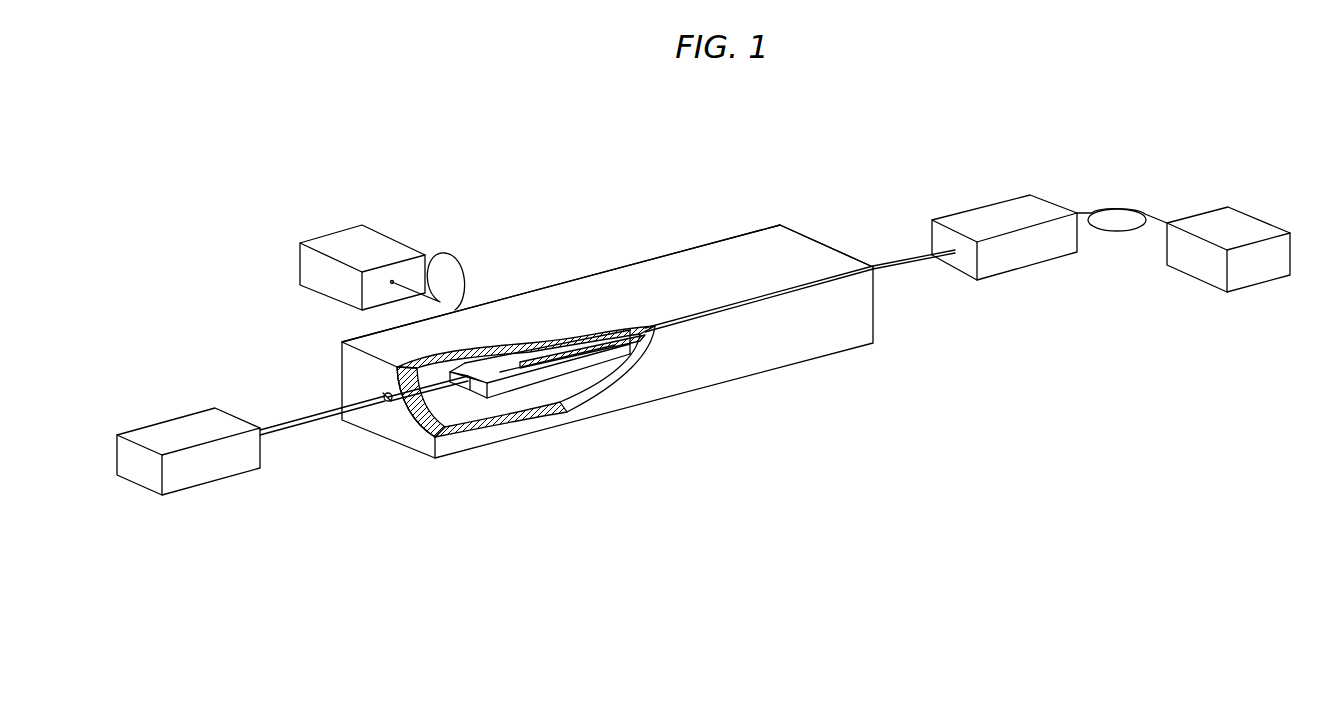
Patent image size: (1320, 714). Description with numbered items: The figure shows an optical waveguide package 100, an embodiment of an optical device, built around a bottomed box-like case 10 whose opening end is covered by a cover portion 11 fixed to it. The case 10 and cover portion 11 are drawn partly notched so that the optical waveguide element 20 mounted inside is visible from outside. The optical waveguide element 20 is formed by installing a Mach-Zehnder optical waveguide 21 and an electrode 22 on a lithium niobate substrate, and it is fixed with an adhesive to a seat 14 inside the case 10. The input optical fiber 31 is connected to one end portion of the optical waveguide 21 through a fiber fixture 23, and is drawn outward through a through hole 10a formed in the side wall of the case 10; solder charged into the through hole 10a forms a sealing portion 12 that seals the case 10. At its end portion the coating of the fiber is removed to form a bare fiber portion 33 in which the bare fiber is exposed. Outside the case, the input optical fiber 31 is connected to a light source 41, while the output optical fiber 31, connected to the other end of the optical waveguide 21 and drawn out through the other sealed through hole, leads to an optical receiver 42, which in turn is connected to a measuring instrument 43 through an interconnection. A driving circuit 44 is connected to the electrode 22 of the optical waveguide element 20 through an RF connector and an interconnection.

The optical waveguide package 100 is at (613, 257).
The case 10 is at (702, 365).
The through hole 10a is at (383, 395).
The cover portion 11 is at (720, 248).
The sealing portion 12 is at (386, 408).
The seat 14 is at (553, 397).
The optical waveguide element 20 is at (547, 436).
The Mach-Zehnder optical waveguide 21 is at (510, 393).
The electrode 22 is at (595, 400).
The fiber fixture 23 is at (468, 390).
The optical fiber 31 is at (302, 427).
The bare fiber portion 33 is at (437, 430).
The light source 41 is at (160, 432).
The optical receiver 42 is at (1005, 268).
The measuring instrument 43 is at (1244, 277).
The driving circuit 44 is at (348, 232).